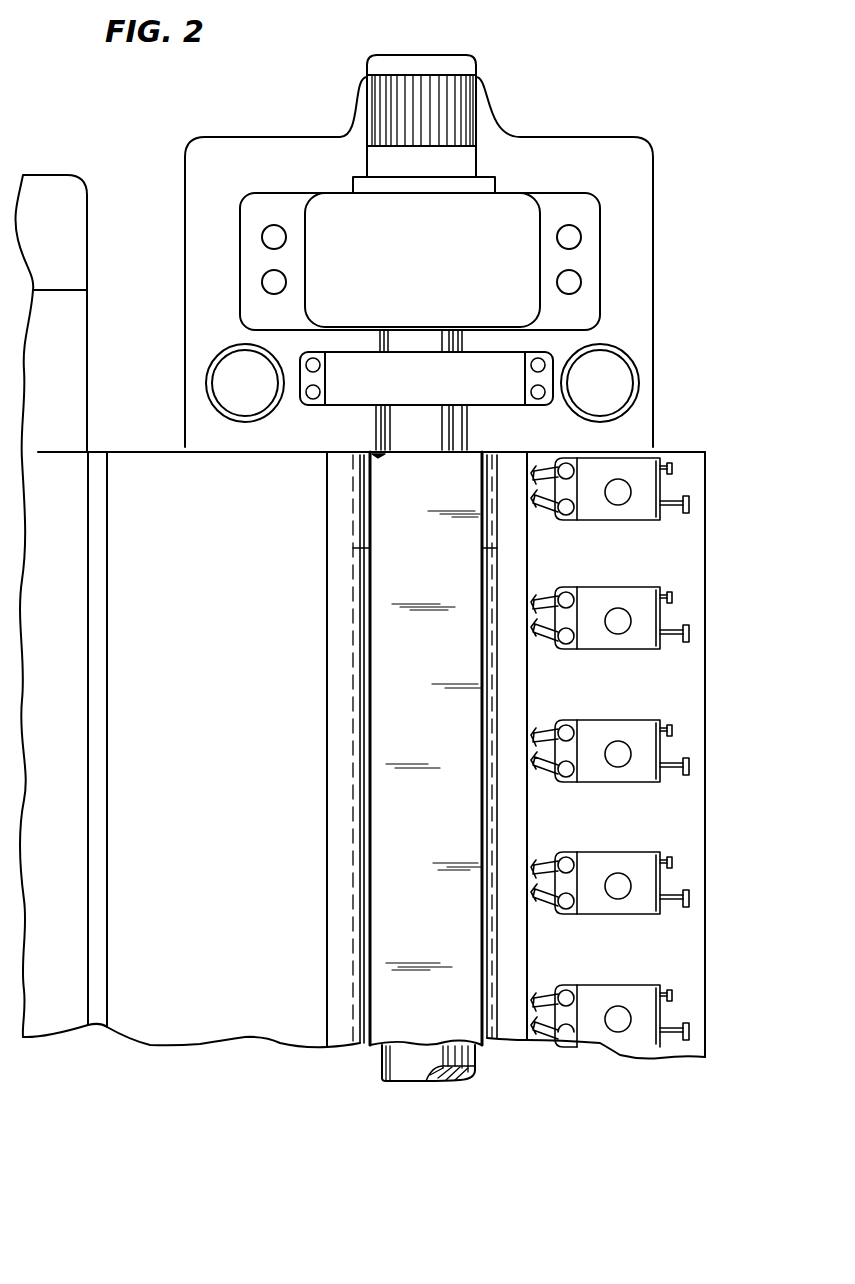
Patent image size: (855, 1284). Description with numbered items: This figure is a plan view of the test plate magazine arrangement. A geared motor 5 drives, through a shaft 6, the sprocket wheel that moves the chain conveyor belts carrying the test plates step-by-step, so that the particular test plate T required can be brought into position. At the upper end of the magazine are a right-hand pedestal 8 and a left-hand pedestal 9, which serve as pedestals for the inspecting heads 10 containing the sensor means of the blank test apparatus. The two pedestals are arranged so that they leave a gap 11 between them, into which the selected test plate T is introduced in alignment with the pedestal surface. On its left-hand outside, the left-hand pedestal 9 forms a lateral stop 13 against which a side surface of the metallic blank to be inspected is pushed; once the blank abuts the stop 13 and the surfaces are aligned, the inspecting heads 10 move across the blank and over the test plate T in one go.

The geared motor 5 is at (503, 222).
The shaft 6 is at (443, 427).
The right-hand pedestal 8 is at (513, 1028).
The left-hand pedestal 9 is at (203, 1028).
The inspecting heads 10 is at (645, 595).
The gap 11 is at (368, 1040).
The lateral stop 13 is at (105, 1013).
The test plate T is at (465, 1020).